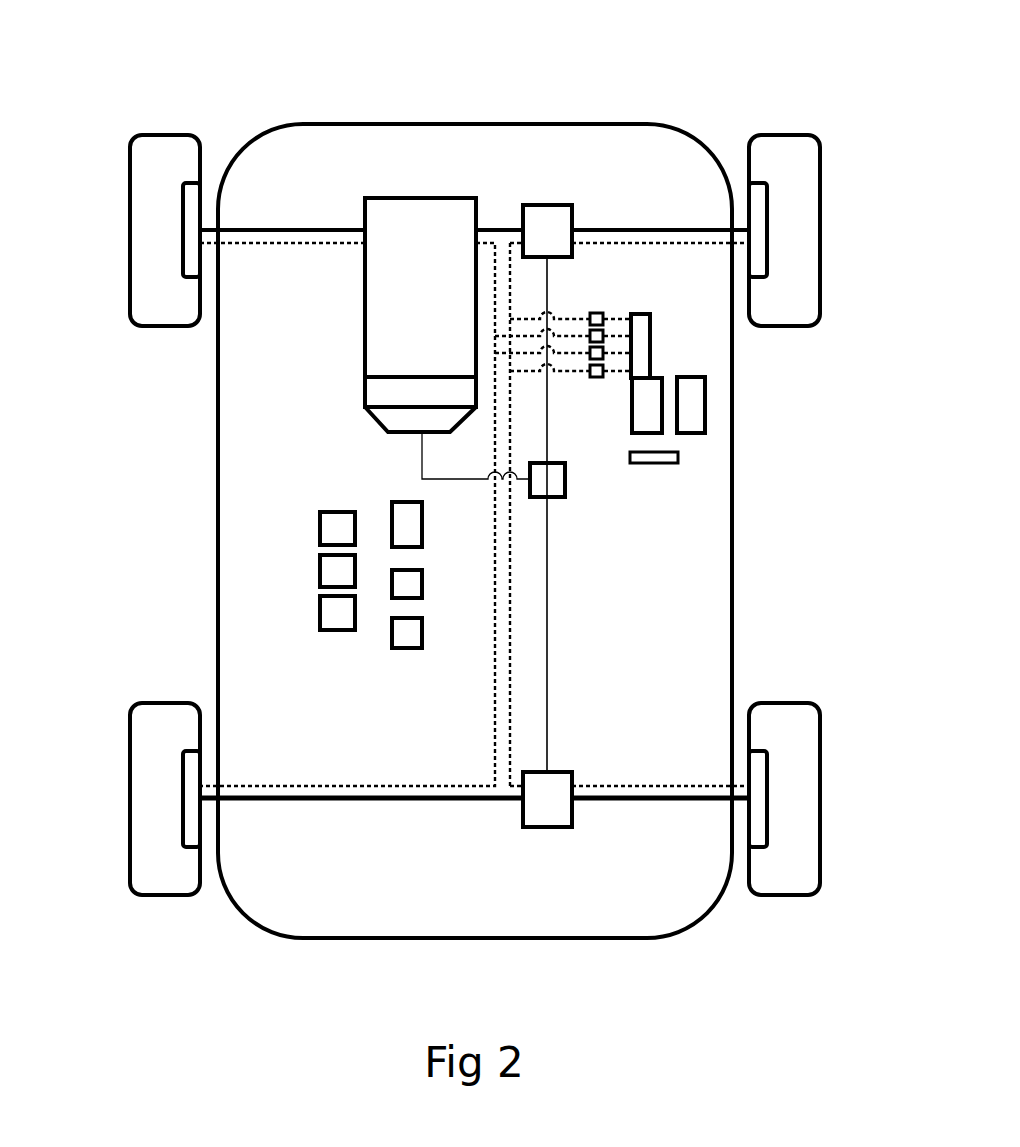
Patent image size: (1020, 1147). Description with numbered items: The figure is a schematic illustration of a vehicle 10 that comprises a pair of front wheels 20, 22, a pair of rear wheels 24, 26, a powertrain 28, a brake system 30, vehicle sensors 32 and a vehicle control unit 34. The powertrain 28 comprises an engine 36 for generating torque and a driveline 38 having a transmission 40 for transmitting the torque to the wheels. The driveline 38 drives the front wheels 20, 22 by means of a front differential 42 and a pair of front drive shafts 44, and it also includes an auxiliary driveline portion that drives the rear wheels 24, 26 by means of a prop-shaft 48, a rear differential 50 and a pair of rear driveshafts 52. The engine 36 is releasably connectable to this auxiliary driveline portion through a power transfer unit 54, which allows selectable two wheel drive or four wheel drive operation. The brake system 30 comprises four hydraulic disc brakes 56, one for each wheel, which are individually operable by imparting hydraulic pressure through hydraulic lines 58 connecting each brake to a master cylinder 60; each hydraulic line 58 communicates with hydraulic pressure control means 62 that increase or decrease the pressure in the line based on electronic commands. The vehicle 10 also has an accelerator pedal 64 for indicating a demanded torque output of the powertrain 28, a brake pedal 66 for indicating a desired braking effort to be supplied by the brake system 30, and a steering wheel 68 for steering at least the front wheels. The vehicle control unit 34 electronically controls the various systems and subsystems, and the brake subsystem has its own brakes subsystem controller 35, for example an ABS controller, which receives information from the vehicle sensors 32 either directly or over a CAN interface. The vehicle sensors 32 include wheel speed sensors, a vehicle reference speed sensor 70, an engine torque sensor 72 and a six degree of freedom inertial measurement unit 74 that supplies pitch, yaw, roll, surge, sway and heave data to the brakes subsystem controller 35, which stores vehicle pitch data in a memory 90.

The vehicle 10 is at (226, 80).
The front wheel 20 is at (130, 205).
The front wheel 22 is at (820, 205).
The rear wheel 24 is at (130, 773).
The rear wheel 26 is at (820, 773).
The powertrain 28 is at (474, 133).
The brake system 30 is at (665, 347).
The vehicle sensors 32 is at (306, 611).
The vehicle control unit 34 is at (423, 519).
The brakes subsystem controller 35 is at (423, 586).
The engine 36 is at (398, 210).
The driveline 38 is at (528, 100).
The transmission 40 is at (362, 396).
The front differential 42 is at (555, 210).
The front drive shafts 44 is at (322, 228).
The prop-shaft 48 is at (549, 655).
The rear differential 50 is at (540, 829).
The rear driveshafts 52 is at (322, 801).
The power transfer unit 54 is at (566, 484).
The hydraulic disc brakes 56 is at (183, 268).
The hydraulic lines 58 is at (298, 244).
The master cylinder 60 is at (641, 312).
The hydraulic pressure control means 62 is at (596, 312).
The accelerator pedal 64 is at (705, 425).
The brake pedal 66 is at (630, 406).
The steering wheel 68 is at (670, 466).
The vehicle reference speed sensor 70 is at (320, 613).
The engine torque sensor 72 is at (320, 571).
The inertial measurement unit 74 is at (320, 528).
The memory 90 is at (423, 634).